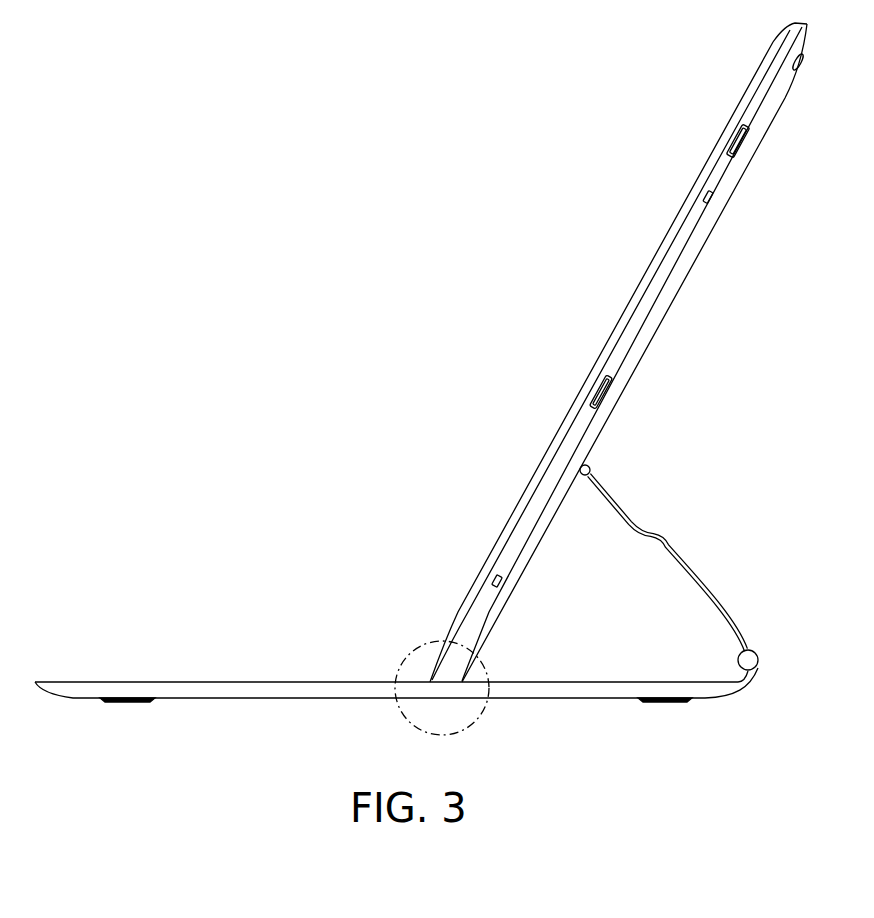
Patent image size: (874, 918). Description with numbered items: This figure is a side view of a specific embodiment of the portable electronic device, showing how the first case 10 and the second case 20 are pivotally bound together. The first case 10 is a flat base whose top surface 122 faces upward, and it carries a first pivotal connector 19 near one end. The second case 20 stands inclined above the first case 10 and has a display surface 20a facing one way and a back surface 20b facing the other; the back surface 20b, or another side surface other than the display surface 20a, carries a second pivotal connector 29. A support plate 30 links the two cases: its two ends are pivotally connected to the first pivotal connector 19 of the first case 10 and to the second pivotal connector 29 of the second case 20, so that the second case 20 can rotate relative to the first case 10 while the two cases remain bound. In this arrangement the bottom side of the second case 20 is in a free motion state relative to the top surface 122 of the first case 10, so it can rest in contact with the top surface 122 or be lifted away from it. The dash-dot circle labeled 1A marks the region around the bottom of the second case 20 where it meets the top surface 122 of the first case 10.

The first case 10 is at (147, 681).
The top surface 122 is at (592, 672).
The first pivotal connector 19 is at (753, 660).
The second case 20 is at (635, 352).
The display surface 20a is at (641, 249).
The back surface 20b is at (710, 256).
The second pivotal connector 29 is at (593, 468).
The support plate 30 is at (688, 558).
The detail region 1A is at (402, 646).